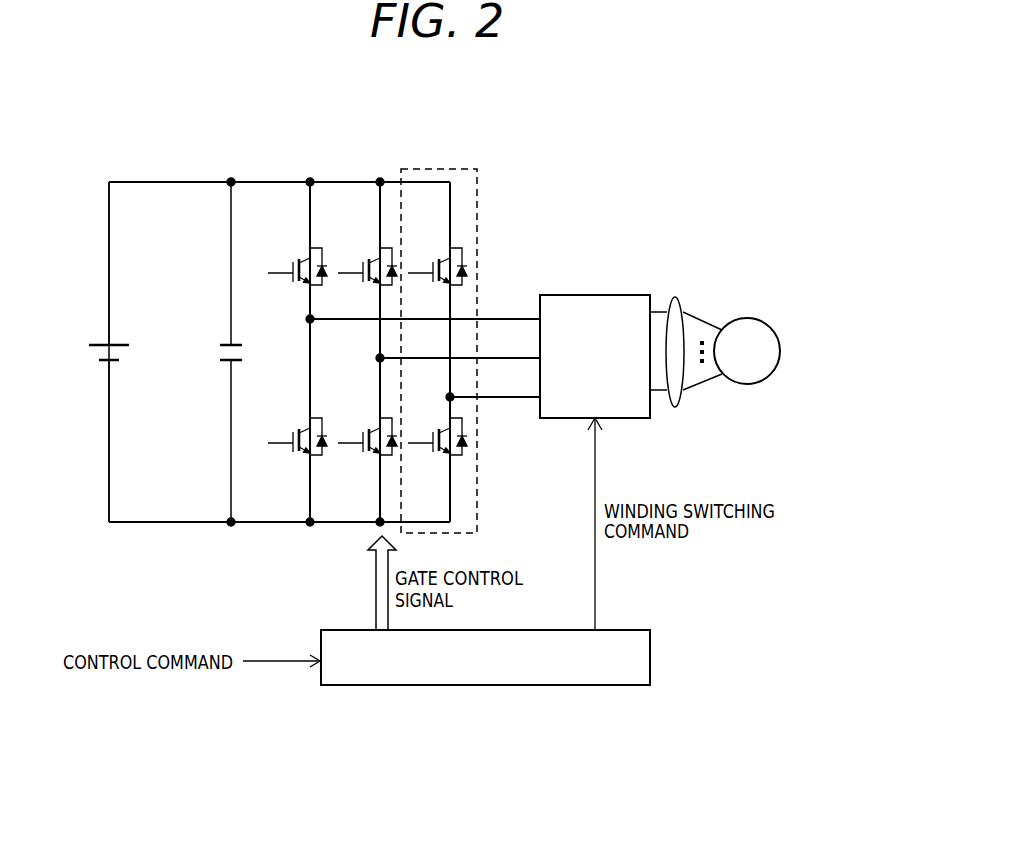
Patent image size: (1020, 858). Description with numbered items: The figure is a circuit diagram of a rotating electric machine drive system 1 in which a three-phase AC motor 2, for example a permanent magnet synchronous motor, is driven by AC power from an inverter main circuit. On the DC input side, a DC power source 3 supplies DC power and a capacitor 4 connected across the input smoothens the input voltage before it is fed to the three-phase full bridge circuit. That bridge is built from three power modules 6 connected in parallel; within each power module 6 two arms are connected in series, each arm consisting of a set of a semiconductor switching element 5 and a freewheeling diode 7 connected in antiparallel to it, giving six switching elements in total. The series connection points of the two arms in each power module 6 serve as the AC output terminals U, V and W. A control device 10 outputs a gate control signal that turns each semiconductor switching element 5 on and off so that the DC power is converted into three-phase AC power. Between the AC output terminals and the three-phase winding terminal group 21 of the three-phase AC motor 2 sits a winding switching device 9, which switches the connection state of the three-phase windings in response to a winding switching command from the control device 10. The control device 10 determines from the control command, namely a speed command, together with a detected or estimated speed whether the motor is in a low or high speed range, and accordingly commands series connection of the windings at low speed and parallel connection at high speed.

The rotating electric machine drive system 1 is at (285, 141).
The three-phase AC motor 2 is at (757, 322).
The DC power source 3 is at (98, 345).
The capacitor 4 is at (221, 345).
The semiconductor switching element 5 is at (432, 265).
The power module 6 is at (455, 170).
The freewheeling diode 7 is at (466, 268).
The winding switching device 9 is at (605, 295).
The control device 10 is at (555, 688).
The three-phase winding terminal group 21 is at (673, 292).